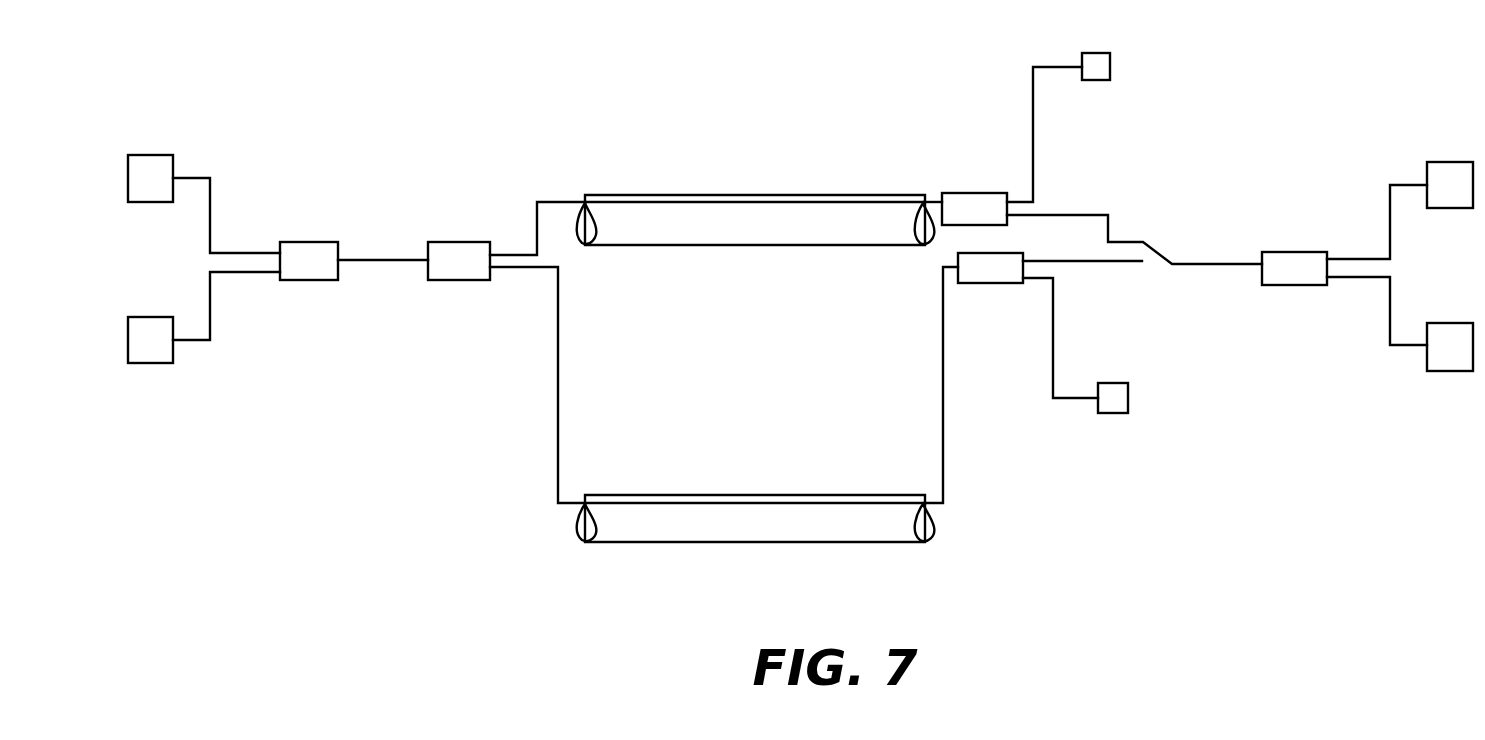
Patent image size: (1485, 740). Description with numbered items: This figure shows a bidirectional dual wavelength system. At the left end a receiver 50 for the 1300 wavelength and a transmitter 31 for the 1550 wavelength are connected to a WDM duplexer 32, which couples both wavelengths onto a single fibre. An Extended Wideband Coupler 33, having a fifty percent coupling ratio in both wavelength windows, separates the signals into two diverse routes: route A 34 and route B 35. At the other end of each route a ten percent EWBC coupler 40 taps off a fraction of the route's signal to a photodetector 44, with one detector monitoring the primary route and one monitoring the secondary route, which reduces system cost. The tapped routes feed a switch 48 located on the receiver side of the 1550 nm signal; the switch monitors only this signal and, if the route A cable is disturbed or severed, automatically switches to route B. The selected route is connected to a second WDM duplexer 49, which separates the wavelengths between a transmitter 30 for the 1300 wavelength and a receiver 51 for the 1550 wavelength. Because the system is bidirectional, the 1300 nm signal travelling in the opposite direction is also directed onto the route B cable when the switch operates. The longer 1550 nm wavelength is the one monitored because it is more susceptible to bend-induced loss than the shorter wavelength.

The 1300 nm transmitter 30 is at (1450, 160).
The 1550 nm transmitter 31 is at (149, 364).
The WDM 32 is at (315, 262).
The Extended Wideband Coupler 33 is at (459, 244).
The route A 34 is at (756, 206).
The route B 35 is at (756, 506).
The EWBC coupler 40 is at (982, 238).
The photodetector 44 is at (1095, 52).
The switch 48 is at (1172, 262).
The WDM 49 is at (1298, 269).
The lightwave receiver 50 is at (148, 153).
The lightwave receiver 51 is at (1450, 373).
The 1300 nm wavelength 1300 is at (799, 227).
The 1550 nm wavelength 1550 is at (799, 299).